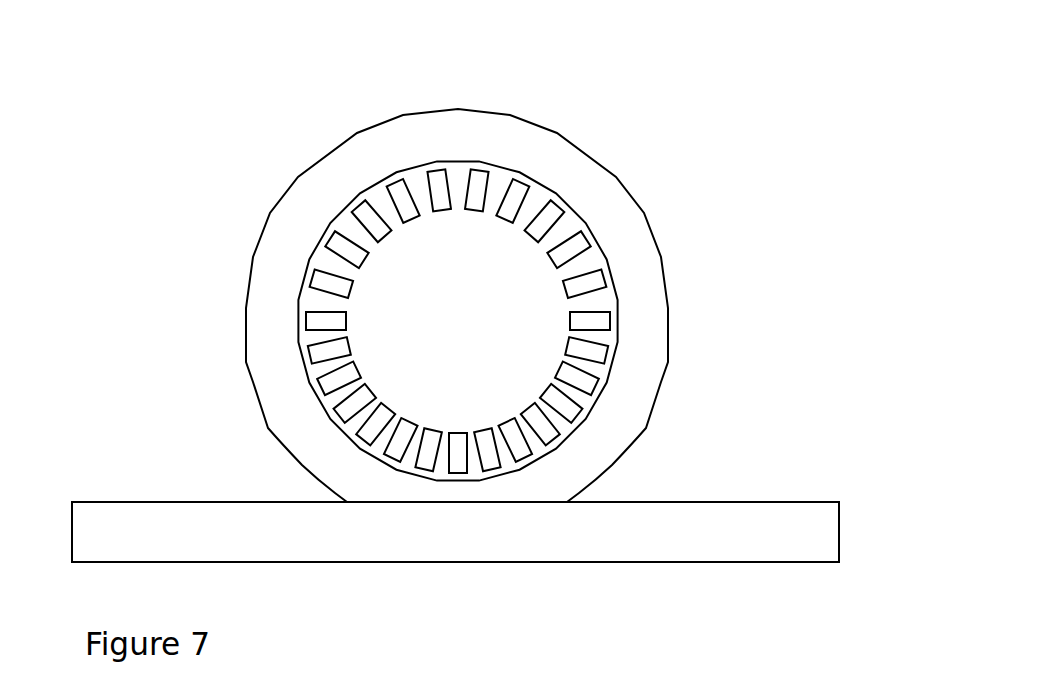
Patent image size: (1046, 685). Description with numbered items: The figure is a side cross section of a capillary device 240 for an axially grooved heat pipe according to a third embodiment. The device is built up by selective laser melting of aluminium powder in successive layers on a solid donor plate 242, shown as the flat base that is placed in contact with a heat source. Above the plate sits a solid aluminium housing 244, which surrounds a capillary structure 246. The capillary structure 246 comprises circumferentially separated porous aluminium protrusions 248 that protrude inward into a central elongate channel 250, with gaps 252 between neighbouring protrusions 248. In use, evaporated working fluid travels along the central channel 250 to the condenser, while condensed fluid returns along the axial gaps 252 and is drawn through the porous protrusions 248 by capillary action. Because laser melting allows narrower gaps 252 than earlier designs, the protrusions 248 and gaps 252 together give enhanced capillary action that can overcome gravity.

The capillary device 240 is at (195, 262).
The solid donor plate 242 is at (793, 545).
The solid aluminium housing 244 is at (267, 385).
The capillary structure 246 is at (353, 213).
The porous aluminium protrusions 248 is at (427, 197).
The central elongate channel 250 is at (483, 288).
The gaps 252 is at (378, 222).